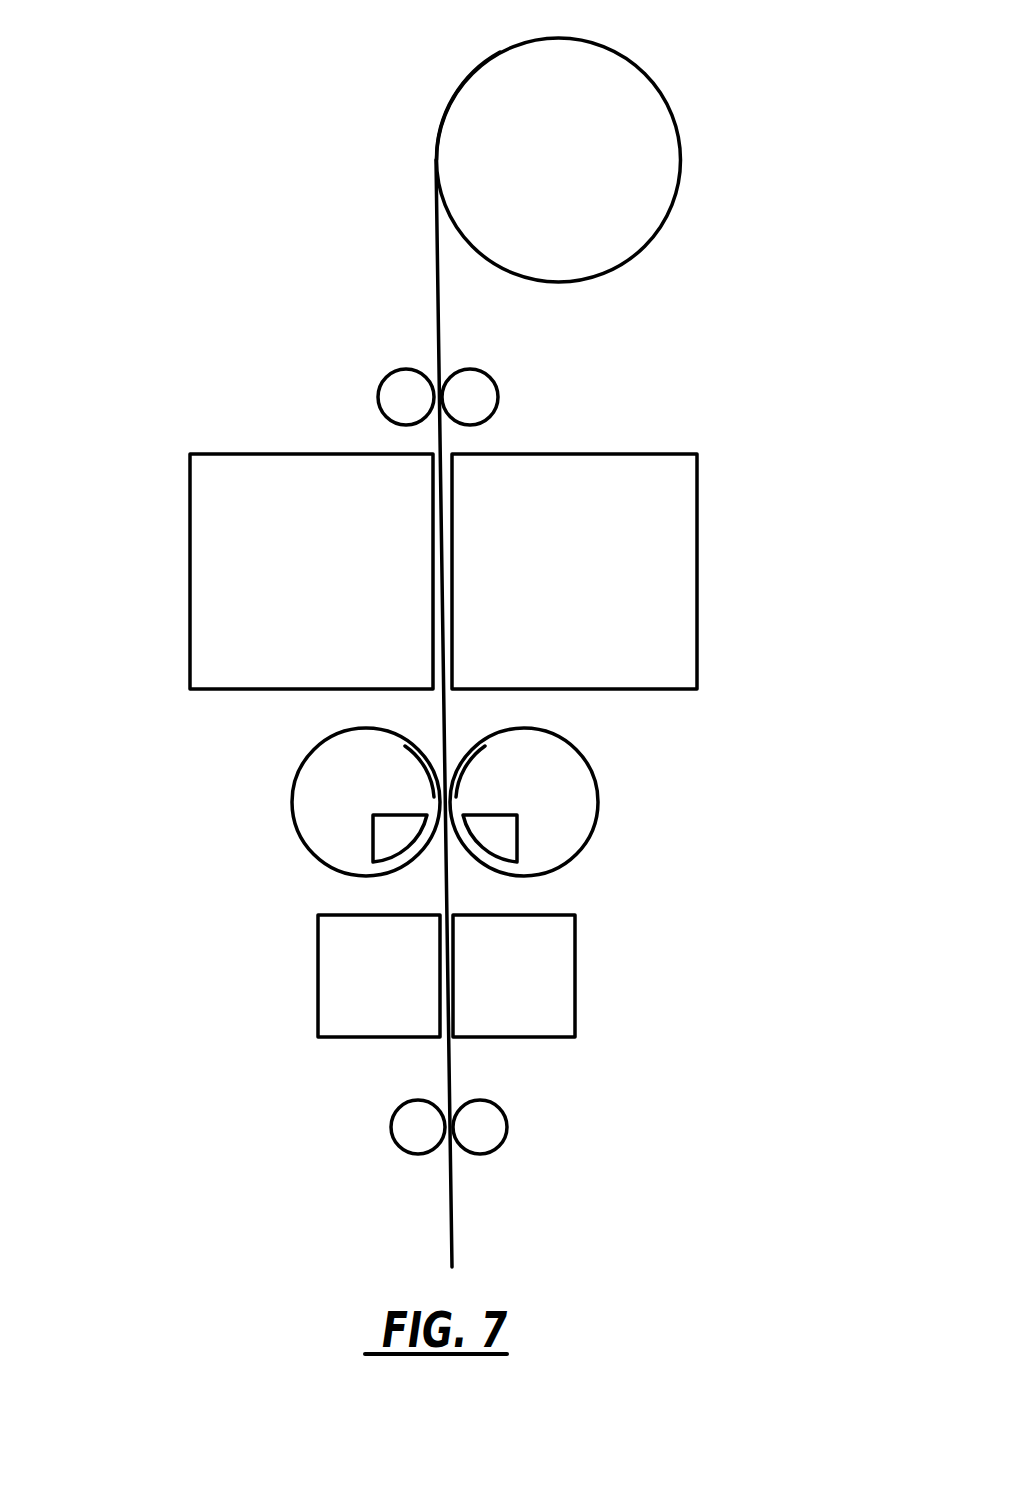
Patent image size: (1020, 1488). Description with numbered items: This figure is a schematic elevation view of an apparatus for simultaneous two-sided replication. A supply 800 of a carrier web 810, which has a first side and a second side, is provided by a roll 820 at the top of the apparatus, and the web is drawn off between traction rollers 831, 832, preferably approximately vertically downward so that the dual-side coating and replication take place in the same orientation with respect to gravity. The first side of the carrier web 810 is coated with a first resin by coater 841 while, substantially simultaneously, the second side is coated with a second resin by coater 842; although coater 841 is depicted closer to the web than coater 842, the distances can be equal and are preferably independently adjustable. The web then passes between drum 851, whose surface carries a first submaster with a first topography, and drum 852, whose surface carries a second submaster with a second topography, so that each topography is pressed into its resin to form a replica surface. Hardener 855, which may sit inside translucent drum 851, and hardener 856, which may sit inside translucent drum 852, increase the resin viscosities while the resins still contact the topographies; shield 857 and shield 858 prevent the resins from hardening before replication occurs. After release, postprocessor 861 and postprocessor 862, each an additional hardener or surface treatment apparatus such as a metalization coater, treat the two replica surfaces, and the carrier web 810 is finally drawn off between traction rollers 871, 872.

The supply 800 is at (627, 57).
The roll 820 is at (528, 62).
The carrier web 810 is at (436, 272).
The traction roller 831 is at (385, 390).
The traction roller 832 is at (493, 393).
The coater 841 is at (199, 542).
The coater 842 is at (690, 553).
The drum 851 is at (307, 792).
The drum 852 is at (580, 790).
The hardener 855 is at (382, 840).
The hardener 856 is at (510, 843).
The shield 857 is at (413, 752).
The shield 858 is at (480, 748).
The postprocessor 861 is at (332, 967).
The postprocessor 862 is at (567, 973).
The traction roller 871 is at (400, 1122).
The traction roller 872 is at (497, 1120).